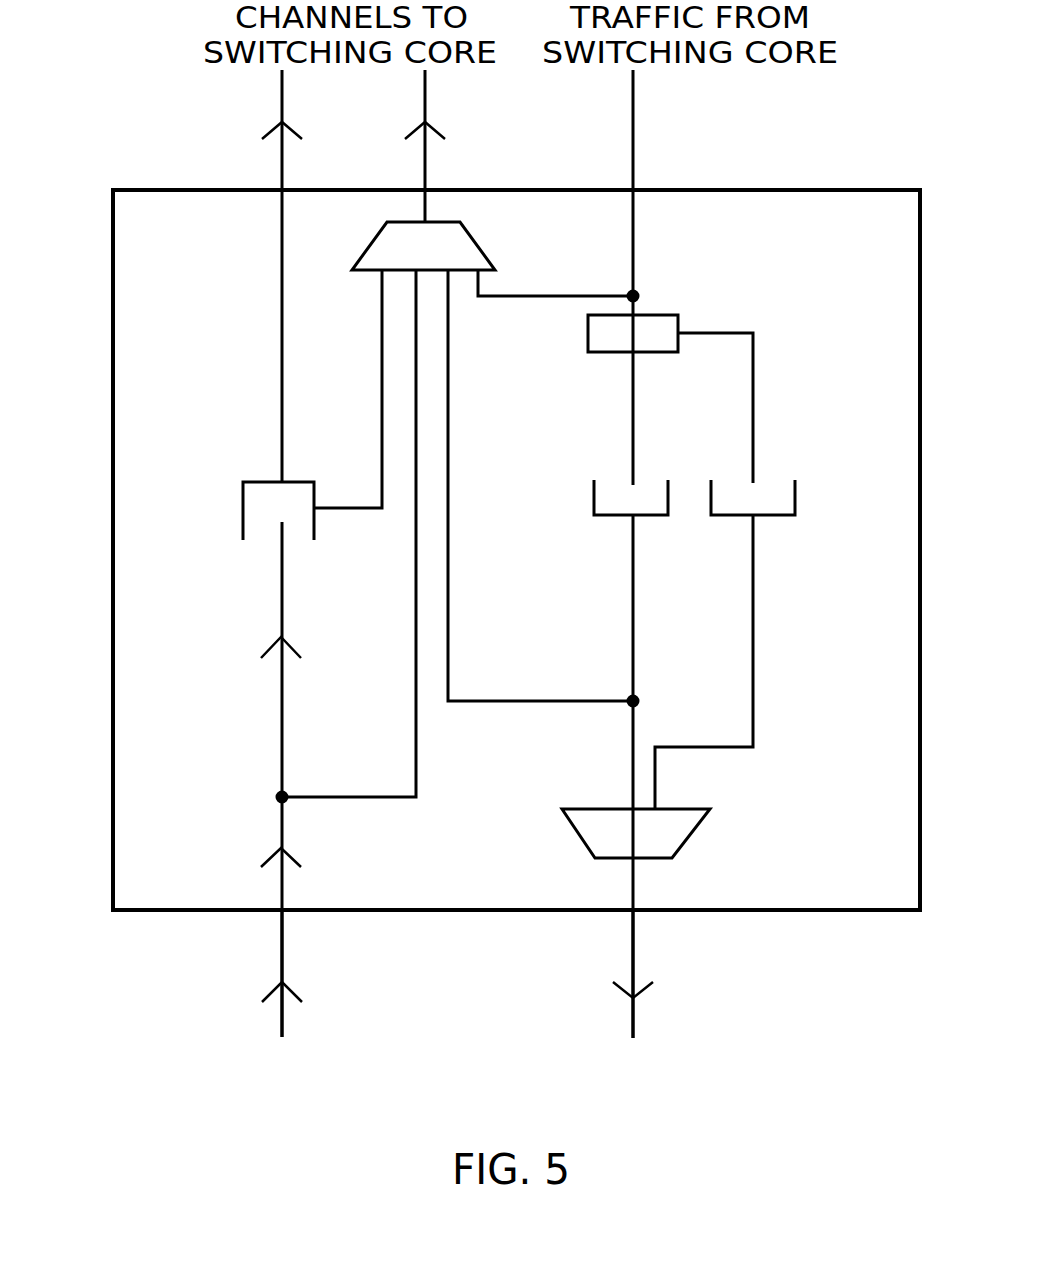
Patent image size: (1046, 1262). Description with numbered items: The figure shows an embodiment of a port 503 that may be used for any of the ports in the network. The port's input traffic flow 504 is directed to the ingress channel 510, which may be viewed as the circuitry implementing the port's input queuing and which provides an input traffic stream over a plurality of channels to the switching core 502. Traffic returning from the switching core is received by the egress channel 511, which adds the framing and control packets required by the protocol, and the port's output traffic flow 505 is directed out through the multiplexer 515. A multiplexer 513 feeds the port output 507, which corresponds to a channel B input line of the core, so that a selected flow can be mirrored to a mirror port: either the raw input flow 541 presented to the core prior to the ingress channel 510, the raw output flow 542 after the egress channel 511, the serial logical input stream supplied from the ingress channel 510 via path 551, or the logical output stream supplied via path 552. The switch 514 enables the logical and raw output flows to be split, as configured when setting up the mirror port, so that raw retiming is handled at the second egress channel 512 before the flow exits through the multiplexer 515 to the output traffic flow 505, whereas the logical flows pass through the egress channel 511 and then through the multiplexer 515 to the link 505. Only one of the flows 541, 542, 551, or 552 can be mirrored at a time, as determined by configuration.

The channels to the switching core 502 is at (282, 100).
The port output 507 is at (425, 100).
The port 503 is at (852, 218).
The multiplexer 513 is at (375, 236).
The switch 514 is at (661, 323).
The logical output stream path 552 is at (508, 298).
The ingress channel 510 is at (243, 507).
The logical input stream path 551 is at (354, 510).
The raw input flow 541 is at (348, 800).
The raw output flow 542 is at (535, 703).
The egress channel 511 is at (594, 495).
The egress channel for raw retiming 512 is at (795, 495).
The multiplexer 515 is at (665, 825).
The input traffic flow 504 is at (282, 964).
The output traffic flow 505 is at (633, 968).